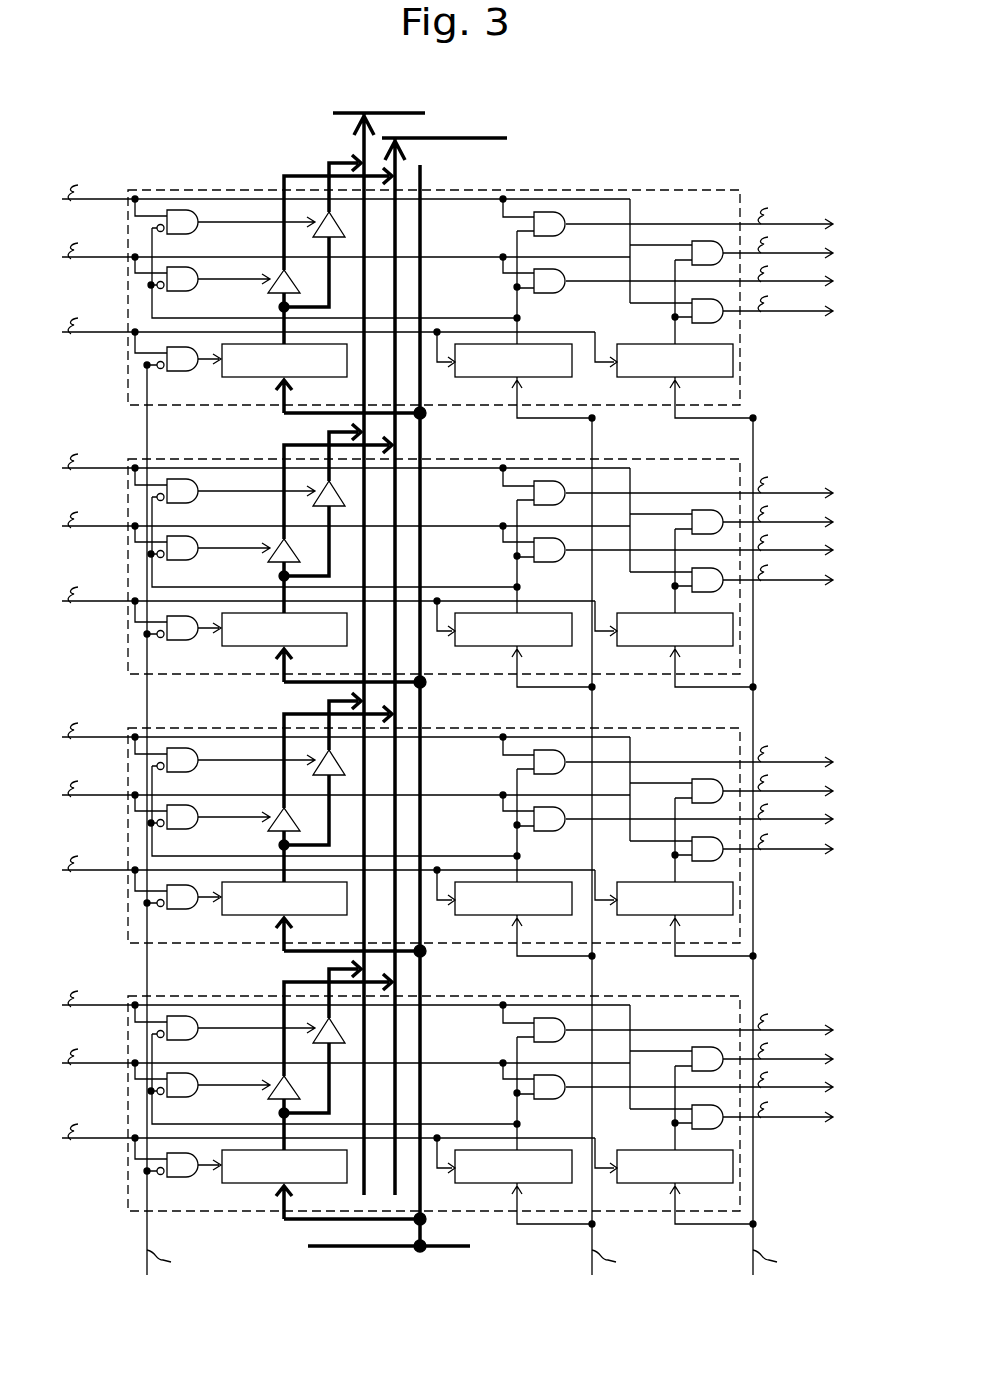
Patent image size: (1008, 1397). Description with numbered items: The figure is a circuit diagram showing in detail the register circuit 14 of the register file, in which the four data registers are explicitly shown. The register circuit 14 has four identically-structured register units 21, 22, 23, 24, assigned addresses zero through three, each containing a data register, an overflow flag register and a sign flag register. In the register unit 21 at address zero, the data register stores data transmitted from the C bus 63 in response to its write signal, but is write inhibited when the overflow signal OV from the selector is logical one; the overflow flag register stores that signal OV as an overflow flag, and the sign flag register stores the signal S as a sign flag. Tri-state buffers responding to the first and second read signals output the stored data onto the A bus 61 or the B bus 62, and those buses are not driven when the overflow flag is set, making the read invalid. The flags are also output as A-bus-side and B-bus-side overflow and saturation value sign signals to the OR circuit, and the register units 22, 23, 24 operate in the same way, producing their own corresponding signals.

The register circuit 14 is at (130, 130).
The register unit 21 is at (447, 299).
The register unit 22 is at (447, 568).
The register unit 23 is at (447, 837).
The register unit 24 is at (447, 1105).
The A bus 61 is at (425, 116).
The B bus 62 is at (487, 141).
The C bus 63 is at (341, 1249).